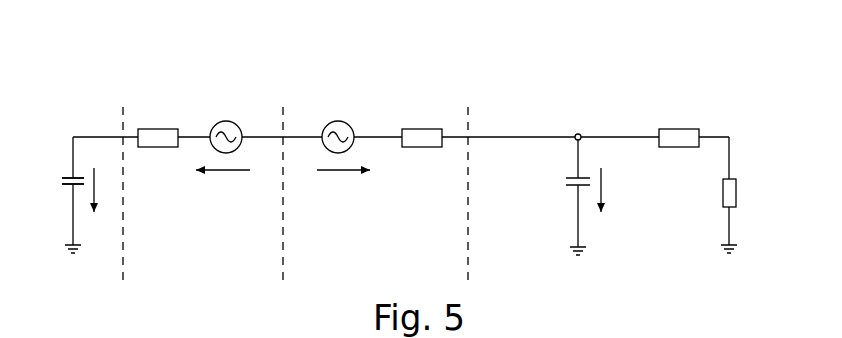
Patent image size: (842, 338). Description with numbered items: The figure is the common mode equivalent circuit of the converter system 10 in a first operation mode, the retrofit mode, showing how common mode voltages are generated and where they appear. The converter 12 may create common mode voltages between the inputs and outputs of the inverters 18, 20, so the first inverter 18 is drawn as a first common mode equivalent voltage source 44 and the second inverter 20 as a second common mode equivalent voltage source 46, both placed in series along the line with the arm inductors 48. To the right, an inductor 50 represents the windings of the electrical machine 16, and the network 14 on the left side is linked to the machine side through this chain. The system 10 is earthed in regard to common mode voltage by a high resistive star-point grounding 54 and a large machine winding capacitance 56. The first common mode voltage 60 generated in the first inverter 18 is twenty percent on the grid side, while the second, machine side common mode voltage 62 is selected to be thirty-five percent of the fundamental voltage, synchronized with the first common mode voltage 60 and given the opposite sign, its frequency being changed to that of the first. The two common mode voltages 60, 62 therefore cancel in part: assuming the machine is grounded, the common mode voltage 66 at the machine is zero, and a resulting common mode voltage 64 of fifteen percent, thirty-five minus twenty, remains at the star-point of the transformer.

The converter system 10 is at (692, 42).
The converter 12 is at (382, 158).
The first network 14 is at (53, 122).
The electrical machine 16 is at (737, 159).
The first inverter 18 is at (238, 167).
The second inverter 20 is at (330, 102).
The first common mode equivalent voltage source 44 is at (220, 121).
The second common mode equivalent voltage source 46 is at (350, 121).
The arm inductors 48 is at (168, 128).
The inductor 50 is at (685, 128).
The high resistive star-point grounding 54 is at (70, 174).
The machine winding capacitance 56 is at (579, 177).
The first common mode voltage 60 is at (238, 176).
The second common mode voltage 62 is at (318, 174).
The resulting common mode voltage 64 is at (100, 200).
The common mode voltage at the machine 66 is at (608, 205).